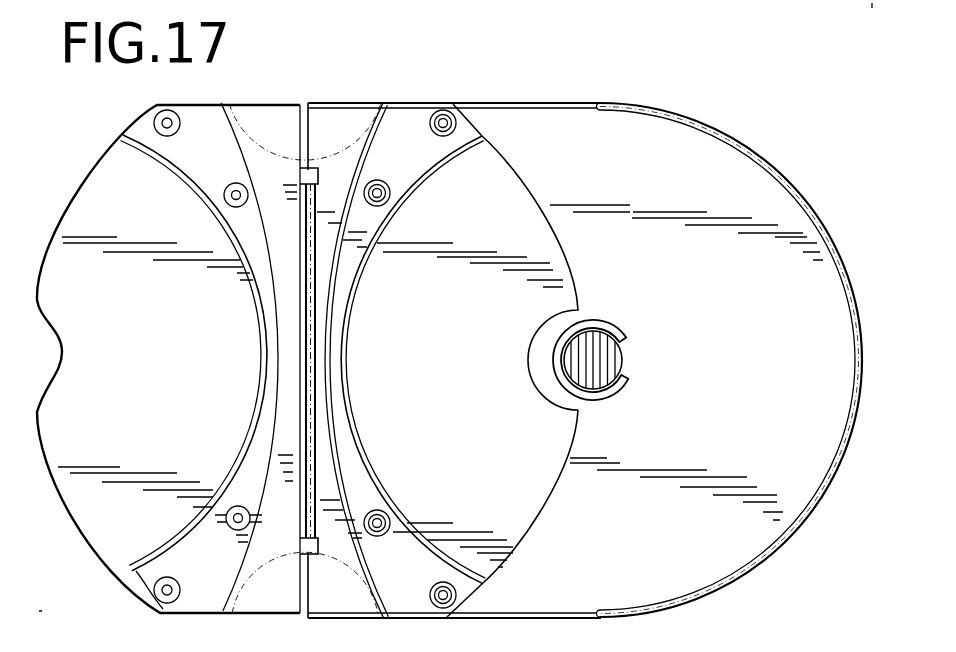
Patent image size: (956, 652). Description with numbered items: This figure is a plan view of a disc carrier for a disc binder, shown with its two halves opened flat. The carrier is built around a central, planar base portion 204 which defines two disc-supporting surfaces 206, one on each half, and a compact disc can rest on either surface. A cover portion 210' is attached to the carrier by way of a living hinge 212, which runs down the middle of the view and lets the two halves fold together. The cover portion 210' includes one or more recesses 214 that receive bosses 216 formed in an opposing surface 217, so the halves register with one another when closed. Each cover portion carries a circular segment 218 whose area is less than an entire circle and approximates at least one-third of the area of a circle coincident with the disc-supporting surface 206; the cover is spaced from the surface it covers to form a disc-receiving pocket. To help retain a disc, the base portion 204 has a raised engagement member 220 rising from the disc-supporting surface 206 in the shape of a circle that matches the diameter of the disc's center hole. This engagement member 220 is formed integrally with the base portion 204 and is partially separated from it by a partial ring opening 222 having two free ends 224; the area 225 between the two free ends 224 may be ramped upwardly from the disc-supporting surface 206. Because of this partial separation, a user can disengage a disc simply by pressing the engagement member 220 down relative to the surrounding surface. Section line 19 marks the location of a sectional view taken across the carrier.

The section line 19- 19 is at (97, 362).
The central planar base portion 204 is at (662, 150).
The disc-supporting surface 206 is at (800, 341).
The cover portion 210' is at (168, 359).
The living hinge 212 is at (316, 183).
The recess 214 is at (172, 112).
The boss 216 is at (450, 118).
The opposing surface 217 is at (405, 133).
The circular segment 218 is at (208, 358).
The raised engagement member 220 is at (600, 345).
The partial ring opening 222 is at (608, 405).
The free end 224 is at (628, 338).
The area between free ends 225 is at (625, 360).